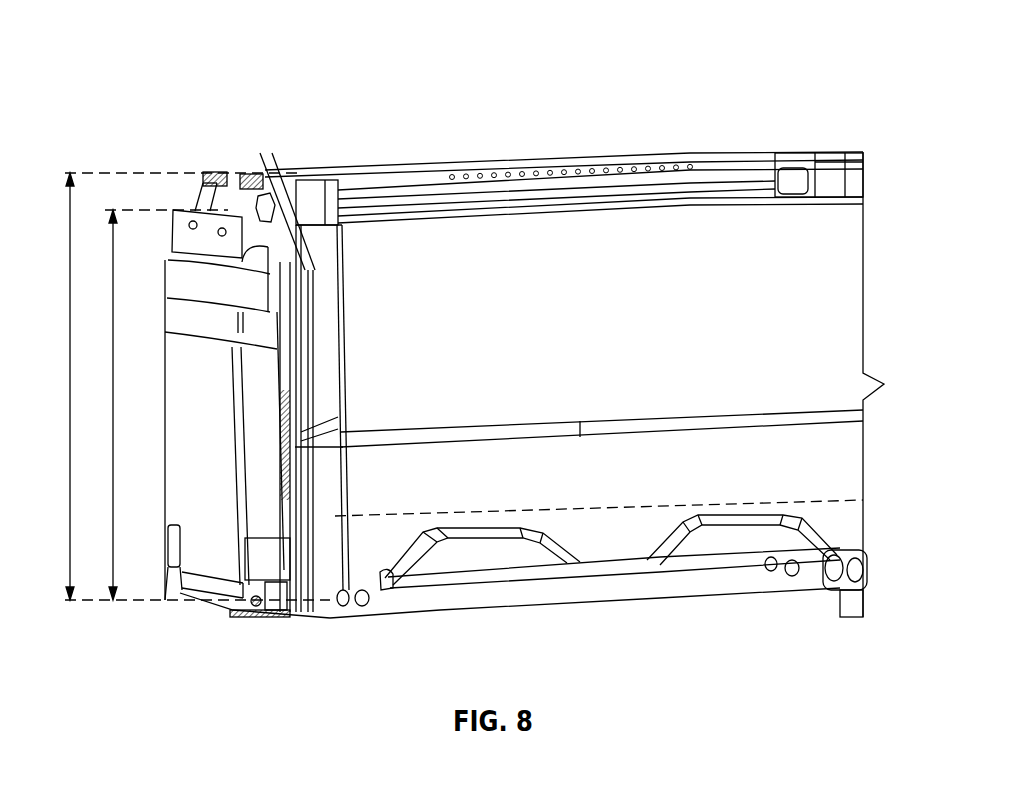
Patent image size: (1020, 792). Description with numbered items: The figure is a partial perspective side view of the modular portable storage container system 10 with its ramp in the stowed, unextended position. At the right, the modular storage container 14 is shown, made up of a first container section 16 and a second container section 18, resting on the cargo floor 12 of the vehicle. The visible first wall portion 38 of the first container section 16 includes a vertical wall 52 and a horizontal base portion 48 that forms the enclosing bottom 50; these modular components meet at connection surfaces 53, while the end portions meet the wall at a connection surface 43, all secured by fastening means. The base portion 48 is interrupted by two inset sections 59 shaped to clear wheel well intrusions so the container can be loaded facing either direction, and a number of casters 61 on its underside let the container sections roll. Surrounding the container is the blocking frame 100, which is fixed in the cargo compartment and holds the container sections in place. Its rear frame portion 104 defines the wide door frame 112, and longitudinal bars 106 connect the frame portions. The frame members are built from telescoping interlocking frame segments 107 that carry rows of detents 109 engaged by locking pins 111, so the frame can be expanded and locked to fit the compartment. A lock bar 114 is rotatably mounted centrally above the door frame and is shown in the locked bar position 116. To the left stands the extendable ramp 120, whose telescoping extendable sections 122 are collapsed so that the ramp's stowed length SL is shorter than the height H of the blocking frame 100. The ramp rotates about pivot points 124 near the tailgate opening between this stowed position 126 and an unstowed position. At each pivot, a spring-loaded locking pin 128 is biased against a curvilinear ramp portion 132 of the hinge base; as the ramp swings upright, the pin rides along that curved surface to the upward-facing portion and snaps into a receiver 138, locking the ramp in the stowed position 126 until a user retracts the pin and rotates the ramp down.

The modular portable storage container system 10 is at (140, 136).
The cargo floor 12 is at (418, 606).
The modular storage container 14 is at (875, 384).
The first container section 16 is at (852, 285).
The second container section 18 is at (730, 166).
The first wall portion 38 is at (489, 407).
The vertical wall 52 is at (641, 334).
The connection surface 43 is at (330, 297).
The base portion 48 is at (610, 598).
The enclosing bottom 50 is at (608, 572).
The connection surfaces 53 is at (808, 200).
The inset sections 59 is at (465, 558).
The casters 61 is at (320, 620).
The blocking frame 100 is at (199, 166).
The rear frame portion 104 is at (318, 345).
The wide door frame 112 is at (290, 178).
The longitudinal bars 106 is at (500, 170).
The interlocking frame segments 107 is at (613, 170).
The detents 109 is at (505, 188).
The locking pins 111 is at (381, 412).
The lock bar 114 is at (524, 132).
The locked bar position 116 is at (273, 183).
The extendable ramp 120 is at (221, 461).
The extendable sections 122 is at (193, 237).
The pivot points 124 is at (250, 613).
The stowed position 126 is at (180, 492).
The spring-loaded locking pin 128 is at (260, 580).
The curvilinear ramp portion 132 is at (257, 580).
The receiver 138 is at (267, 617).
The height of the blocking frame H is at (72, 318).
The stowed length SL is at (113, 413).